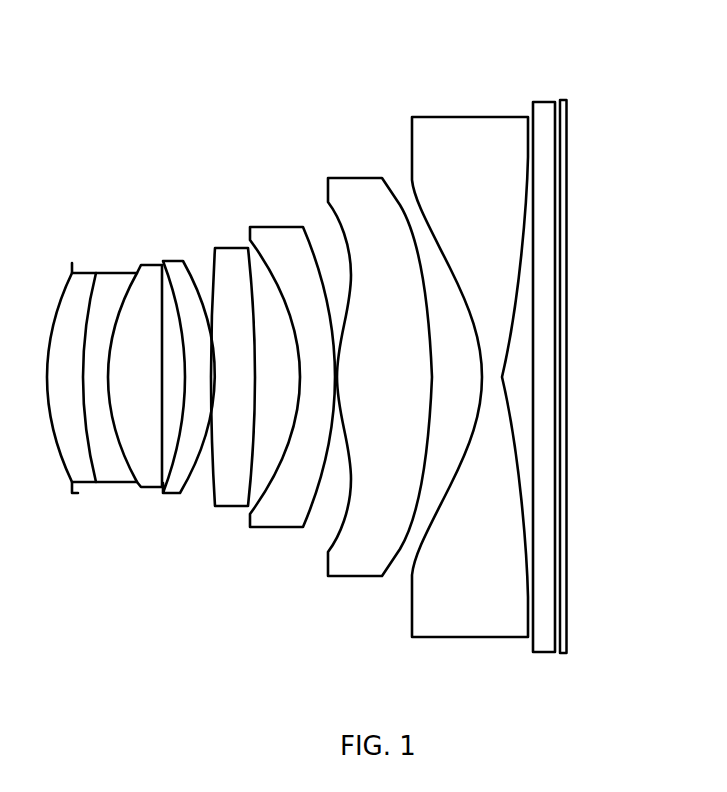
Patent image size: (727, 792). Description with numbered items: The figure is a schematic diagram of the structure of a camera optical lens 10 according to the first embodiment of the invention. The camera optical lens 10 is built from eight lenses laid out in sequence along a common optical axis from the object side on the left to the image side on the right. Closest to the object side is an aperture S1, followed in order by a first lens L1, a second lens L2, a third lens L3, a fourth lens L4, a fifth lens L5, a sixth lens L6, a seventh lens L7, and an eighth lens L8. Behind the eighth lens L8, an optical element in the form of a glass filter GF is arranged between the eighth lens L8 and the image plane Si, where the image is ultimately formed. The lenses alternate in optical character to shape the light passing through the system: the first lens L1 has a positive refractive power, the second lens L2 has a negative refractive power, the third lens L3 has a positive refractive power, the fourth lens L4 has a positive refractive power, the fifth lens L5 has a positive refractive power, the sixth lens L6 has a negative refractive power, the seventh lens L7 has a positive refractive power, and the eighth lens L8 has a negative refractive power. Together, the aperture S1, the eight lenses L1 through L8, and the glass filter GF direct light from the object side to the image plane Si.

The camera optical lens 10 is at (318, 84).
The aperture S1 is at (62, 377).
The first lens L1 is at (71, 369).
The second lens L2 is at (116, 367).
The third lens L3 is at (147, 367).
The fourth lens L4 is at (188, 368).
The fifth lens L5 is at (233, 369).
The sixth lens L6 is at (292, 368).
The seventh lens L7 is at (380, 368).
The eighth lens L8 is at (470, 364).
The glass filter GF is at (539, 369).
The image plane Si is at (560, 367).